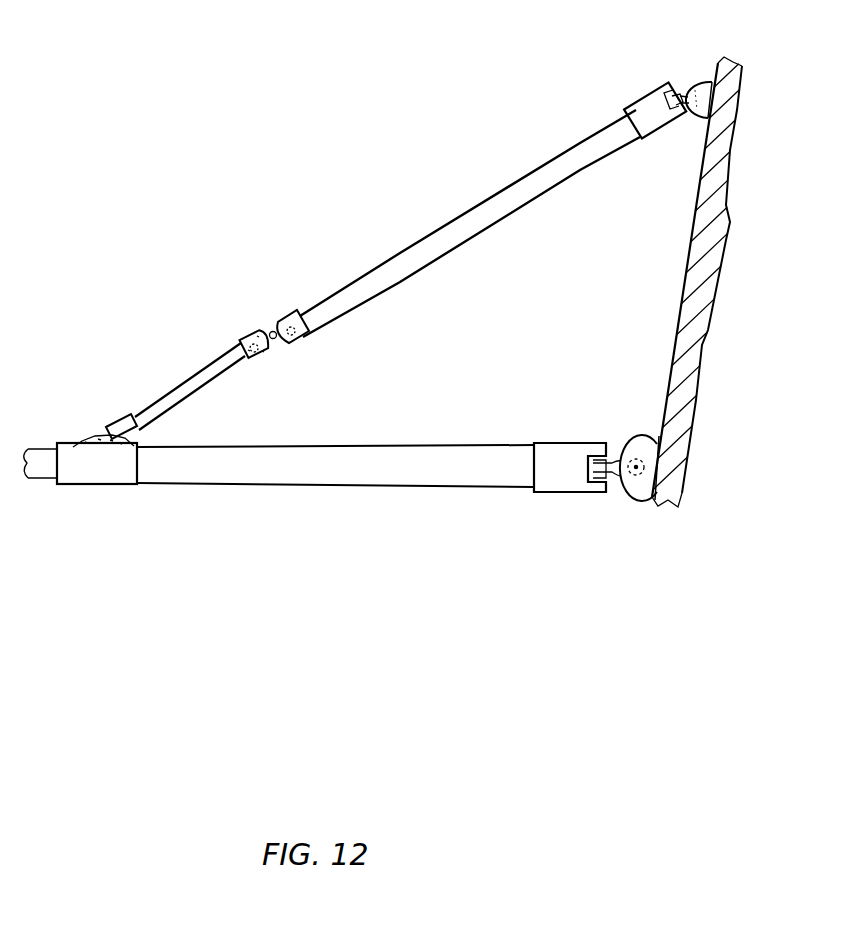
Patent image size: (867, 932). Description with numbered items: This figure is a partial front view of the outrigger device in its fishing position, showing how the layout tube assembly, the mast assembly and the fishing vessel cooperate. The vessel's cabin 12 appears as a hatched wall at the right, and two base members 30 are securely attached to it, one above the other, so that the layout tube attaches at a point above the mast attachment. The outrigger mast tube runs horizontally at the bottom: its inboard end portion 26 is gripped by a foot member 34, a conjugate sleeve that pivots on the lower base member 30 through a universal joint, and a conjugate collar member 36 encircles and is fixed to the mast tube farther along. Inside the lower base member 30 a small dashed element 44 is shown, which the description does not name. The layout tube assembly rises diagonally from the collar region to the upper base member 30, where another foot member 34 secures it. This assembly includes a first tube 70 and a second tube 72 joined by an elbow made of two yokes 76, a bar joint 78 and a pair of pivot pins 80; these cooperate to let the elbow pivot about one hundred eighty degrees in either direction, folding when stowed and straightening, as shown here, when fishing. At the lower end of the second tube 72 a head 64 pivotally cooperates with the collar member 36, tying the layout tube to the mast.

The cabin 12 is at (729, 63).
The inboard end portion 26 is at (301, 485).
The base member 30 is at (647, 493).
The foot member 34 is at (553, 481).
The collar member 36 is at (78, 478).
The ball 44 is at (633, 465).
The head 64 is at (113, 425).
The first tube 70 is at (452, 224).
The second tube 72 is at (173, 391).
The yokes 76 is at (289, 315).
The bar joint 78 is at (271, 330).
The pivot pins 80 is at (256, 342).